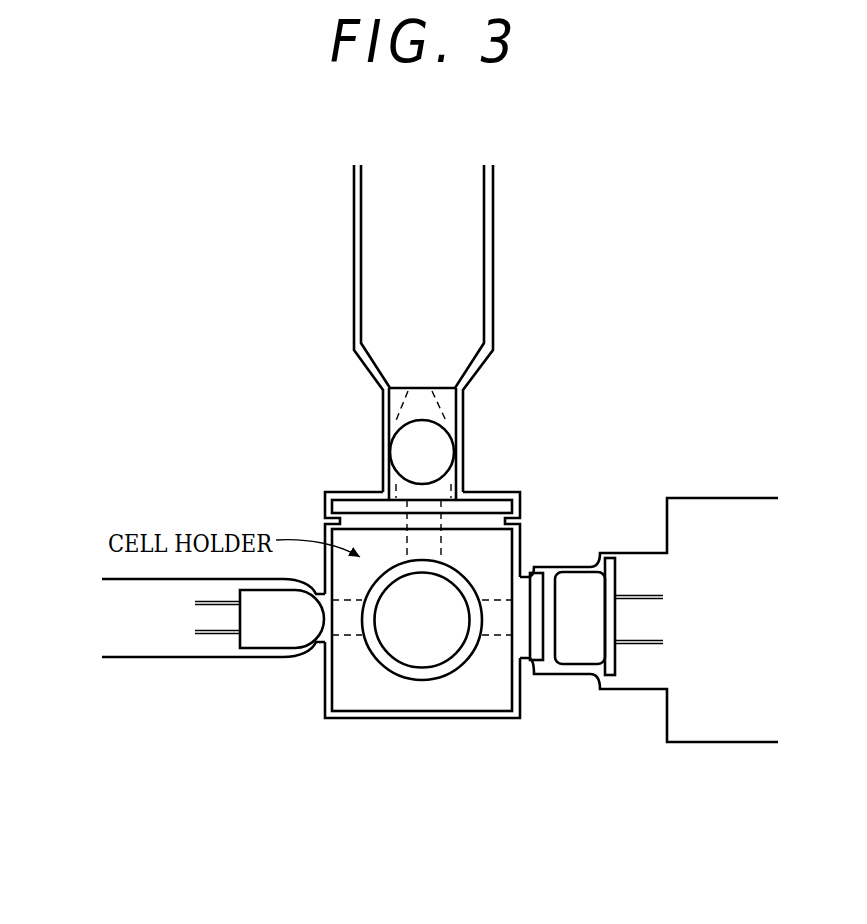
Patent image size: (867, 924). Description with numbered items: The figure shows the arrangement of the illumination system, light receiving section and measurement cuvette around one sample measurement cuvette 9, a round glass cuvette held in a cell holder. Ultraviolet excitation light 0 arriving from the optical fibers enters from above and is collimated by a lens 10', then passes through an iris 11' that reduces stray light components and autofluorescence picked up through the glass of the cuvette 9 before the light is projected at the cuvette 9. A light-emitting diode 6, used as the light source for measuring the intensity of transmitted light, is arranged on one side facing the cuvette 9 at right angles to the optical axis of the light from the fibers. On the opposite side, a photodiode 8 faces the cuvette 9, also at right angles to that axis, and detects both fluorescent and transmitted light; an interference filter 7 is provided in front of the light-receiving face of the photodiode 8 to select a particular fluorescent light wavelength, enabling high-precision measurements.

The light beam 0 is at (434, 379).
The lens 10' is at (372, 449).
The iris 11' is at (451, 477).
The sample measurement cuvette 9 is at (394, 664).
The light-emitting diode 6 is at (298, 620).
The interference filter 7 is at (535, 654).
The photodiode 8 is at (562, 607).